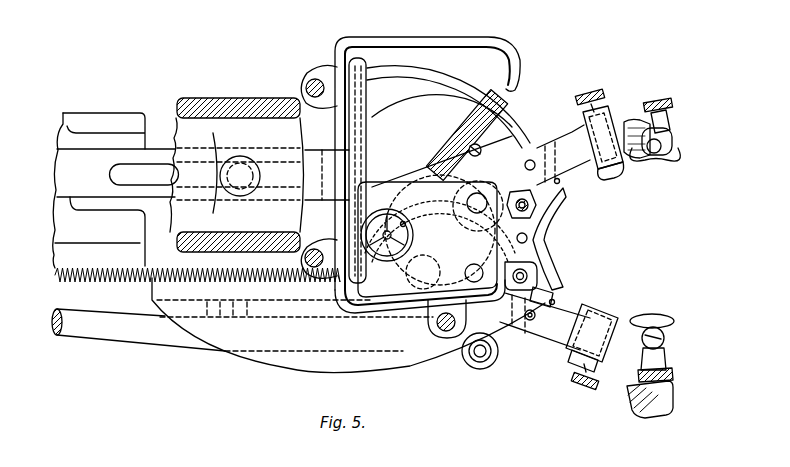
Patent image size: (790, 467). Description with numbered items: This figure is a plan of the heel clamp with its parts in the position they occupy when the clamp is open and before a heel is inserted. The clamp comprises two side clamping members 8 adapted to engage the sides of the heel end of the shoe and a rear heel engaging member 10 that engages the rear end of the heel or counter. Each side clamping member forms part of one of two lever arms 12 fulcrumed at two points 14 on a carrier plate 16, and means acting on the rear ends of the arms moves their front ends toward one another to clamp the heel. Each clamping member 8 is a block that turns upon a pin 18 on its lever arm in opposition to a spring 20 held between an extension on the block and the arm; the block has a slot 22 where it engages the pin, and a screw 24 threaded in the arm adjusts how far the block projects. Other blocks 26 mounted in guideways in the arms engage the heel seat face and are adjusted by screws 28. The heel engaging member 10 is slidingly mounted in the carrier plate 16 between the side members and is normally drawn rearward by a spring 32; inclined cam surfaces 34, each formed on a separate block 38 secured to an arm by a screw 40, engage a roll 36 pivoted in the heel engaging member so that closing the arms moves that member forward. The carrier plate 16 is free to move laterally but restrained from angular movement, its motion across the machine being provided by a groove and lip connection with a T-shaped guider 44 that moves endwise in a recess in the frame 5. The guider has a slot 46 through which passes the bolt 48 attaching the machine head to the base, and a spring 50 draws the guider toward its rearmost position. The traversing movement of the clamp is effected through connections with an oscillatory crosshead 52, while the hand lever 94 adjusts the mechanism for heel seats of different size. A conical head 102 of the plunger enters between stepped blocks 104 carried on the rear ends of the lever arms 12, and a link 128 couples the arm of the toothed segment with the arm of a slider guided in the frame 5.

The frame 5 is at (205, 98).
The clamping members 8 is at (664, 163).
The heel engaging member 10 is at (542, 240).
The lever arms 12 is at (561, 143).
The fulcrum points 14 is at (524, 117).
The carrier plate 16 is at (472, 366).
The pin 18 is at (668, 138).
The spring 20 is at (632, 121).
The slot 22 is at (664, 152).
The screw 24 is at (661, 98).
The blocks 26 is at (617, 168).
The screws 28 is at (592, 96).
The spring 32 is at (528, 236).
The cam surfaces 34 is at (557, 181).
The roll 36 is at (531, 272).
The block 38 is at (557, 318).
The screw 40 is at (530, 320).
The T-shaped guider 44 is at (357, 60).
The slot 46 is at (133, 172).
The bolt 48 is at (239, 170).
The spring 50 is at (97, 277).
The oscillatory crosshead 52 is at (445, 102).
The hand lever 94 is at (652, 401).
The conical head 102 is at (403, 226).
The stepped blocks 104 is at (387, 215).
The link 128 is at (142, 338).